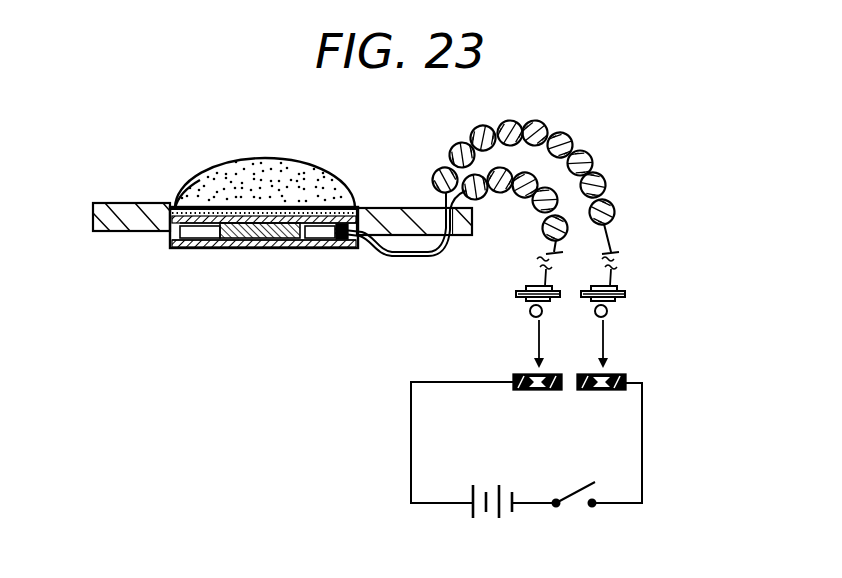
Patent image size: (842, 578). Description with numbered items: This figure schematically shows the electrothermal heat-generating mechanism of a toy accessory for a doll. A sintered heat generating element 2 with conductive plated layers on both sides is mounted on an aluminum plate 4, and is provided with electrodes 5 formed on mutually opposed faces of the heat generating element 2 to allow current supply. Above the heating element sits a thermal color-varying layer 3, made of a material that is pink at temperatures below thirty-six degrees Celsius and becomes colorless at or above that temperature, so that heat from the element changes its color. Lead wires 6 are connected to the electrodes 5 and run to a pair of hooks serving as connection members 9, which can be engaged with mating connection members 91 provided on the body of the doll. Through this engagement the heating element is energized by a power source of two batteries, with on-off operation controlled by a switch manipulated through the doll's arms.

The heat generating element 2 is at (225, 248).
The thermal color-varying layer 3 is at (322, 208).
The aluminum plate 4 is at (187, 190).
The electrodes 5 is at (315, 247).
The lead wires 6 is at (409, 253).
The connection members 9 is at (233, 172).
The connection members 91 is at (522, 375).